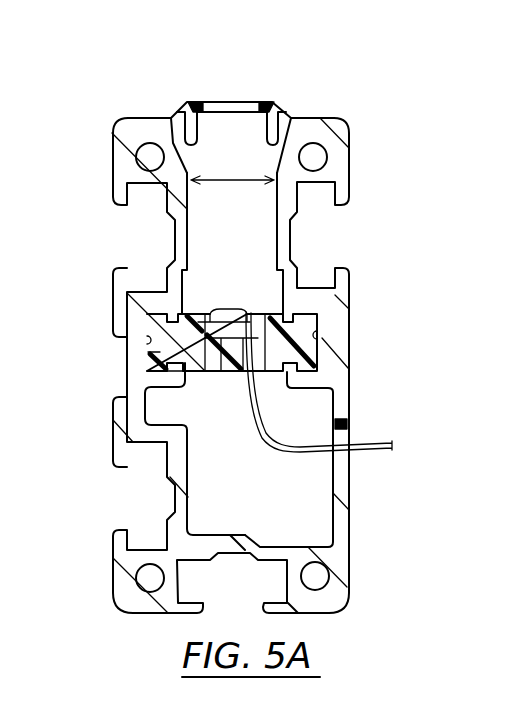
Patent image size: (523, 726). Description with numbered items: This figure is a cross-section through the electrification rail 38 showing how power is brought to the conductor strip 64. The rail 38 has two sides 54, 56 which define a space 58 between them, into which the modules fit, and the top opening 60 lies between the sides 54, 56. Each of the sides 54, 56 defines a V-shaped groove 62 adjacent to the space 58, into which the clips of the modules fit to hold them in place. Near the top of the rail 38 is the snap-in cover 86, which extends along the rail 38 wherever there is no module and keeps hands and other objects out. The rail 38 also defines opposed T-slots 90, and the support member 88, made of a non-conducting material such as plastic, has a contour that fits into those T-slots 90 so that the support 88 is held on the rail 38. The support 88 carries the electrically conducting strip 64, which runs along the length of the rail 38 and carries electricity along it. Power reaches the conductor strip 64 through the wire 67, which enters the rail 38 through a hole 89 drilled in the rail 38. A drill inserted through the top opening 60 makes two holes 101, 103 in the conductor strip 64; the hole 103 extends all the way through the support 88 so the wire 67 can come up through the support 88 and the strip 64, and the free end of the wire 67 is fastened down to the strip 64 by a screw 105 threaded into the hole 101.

The electrification rail 38 is at (112, 133).
The side 54 is at (194, 231).
The side 56 is at (276, 242).
The space 58 is at (230, 197).
The top opening 60 is at (282, 104).
The V-shaped groove 62 is at (281, 158).
The conductor strip 64 is at (205, 333).
The wire 67 is at (373, 454).
The snap-in cover 86 is at (233, 100).
The support member 88 is at (146, 363).
The hole 89 is at (349, 427).
The T-slot 90 is at (146, 340).
The hole 101 is at (209, 346).
The hole 103 is at (240, 370).
The screw 105 is at (217, 313).